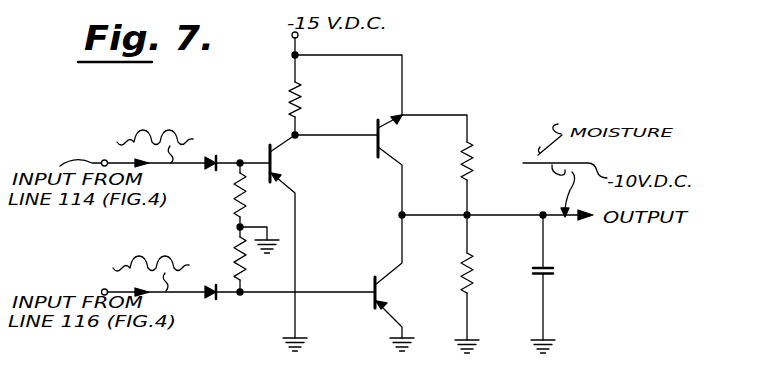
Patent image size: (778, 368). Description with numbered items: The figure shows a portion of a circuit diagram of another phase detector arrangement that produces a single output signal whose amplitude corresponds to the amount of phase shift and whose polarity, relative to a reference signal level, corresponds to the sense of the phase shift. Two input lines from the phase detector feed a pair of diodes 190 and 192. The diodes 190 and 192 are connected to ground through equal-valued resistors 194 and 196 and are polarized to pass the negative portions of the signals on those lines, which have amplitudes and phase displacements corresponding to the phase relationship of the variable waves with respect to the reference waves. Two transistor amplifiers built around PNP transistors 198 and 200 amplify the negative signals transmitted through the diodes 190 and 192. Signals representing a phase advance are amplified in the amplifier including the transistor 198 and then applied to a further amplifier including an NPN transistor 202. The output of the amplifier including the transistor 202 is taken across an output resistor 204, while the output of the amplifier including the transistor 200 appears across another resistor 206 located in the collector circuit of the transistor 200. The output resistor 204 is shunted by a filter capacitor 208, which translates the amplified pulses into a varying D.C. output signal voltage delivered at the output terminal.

The diode 190 is at (247, 130).
The diode 192 is at (213, 296).
The resistor 194 is at (236, 210).
The resistor 196 is at (235, 251).
The PNP transistor 198 is at (285, 167).
The PNP transistor 200 is at (382, 275).
The NPN transistor 202 is at (374, 129).
The output resistor 204 is at (472, 273).
The resistor 206 is at (524, 126).
The filter capacitor 208 is at (553, 272).